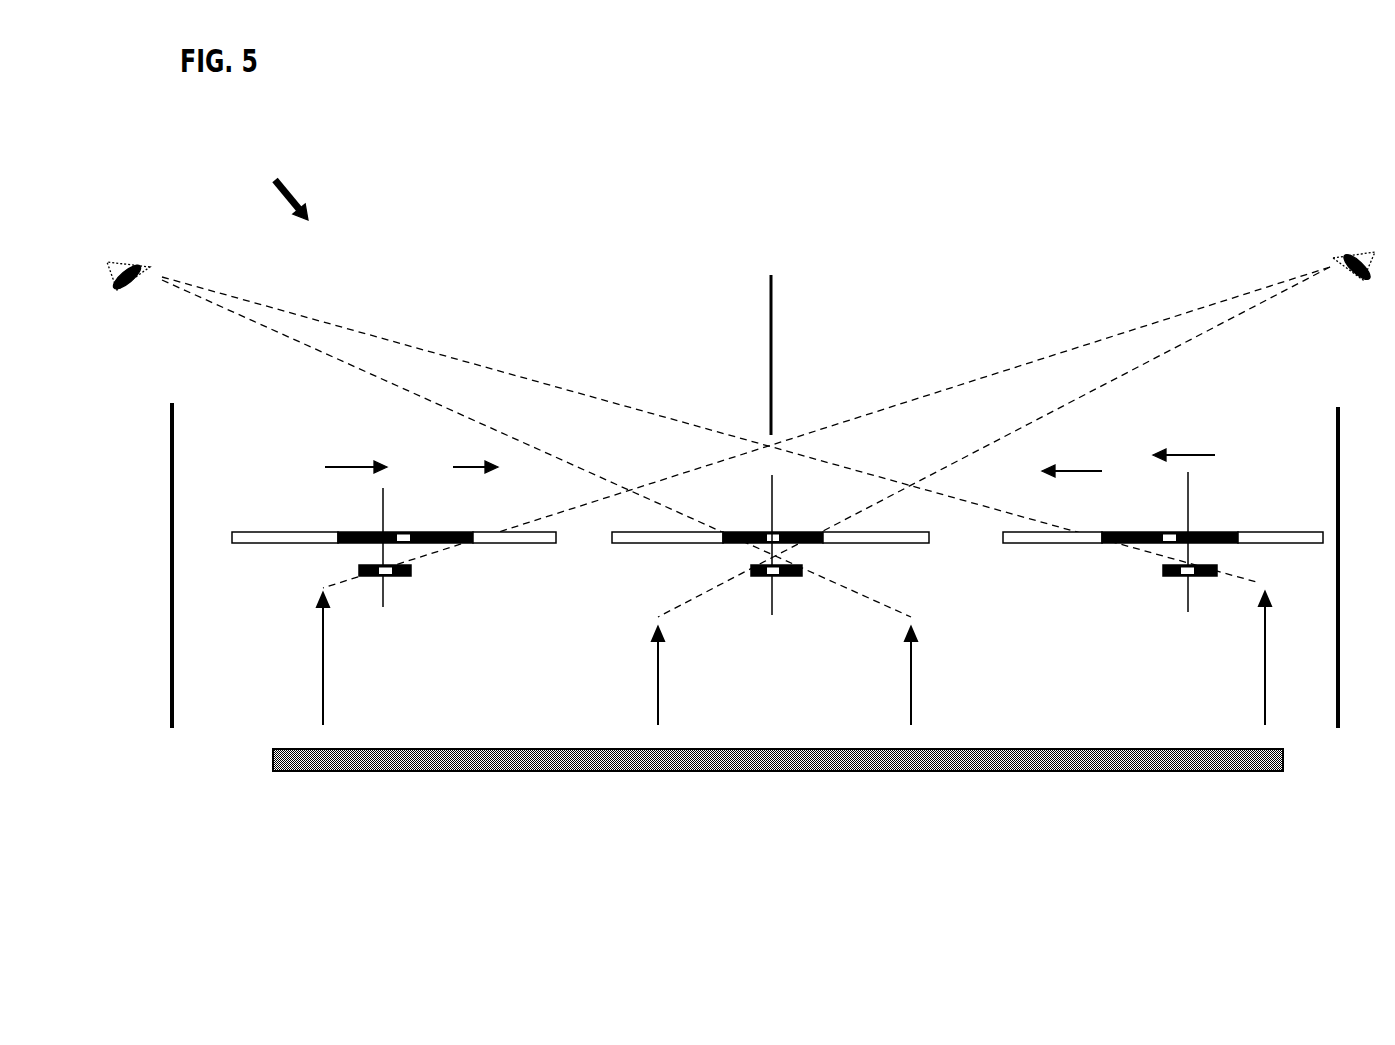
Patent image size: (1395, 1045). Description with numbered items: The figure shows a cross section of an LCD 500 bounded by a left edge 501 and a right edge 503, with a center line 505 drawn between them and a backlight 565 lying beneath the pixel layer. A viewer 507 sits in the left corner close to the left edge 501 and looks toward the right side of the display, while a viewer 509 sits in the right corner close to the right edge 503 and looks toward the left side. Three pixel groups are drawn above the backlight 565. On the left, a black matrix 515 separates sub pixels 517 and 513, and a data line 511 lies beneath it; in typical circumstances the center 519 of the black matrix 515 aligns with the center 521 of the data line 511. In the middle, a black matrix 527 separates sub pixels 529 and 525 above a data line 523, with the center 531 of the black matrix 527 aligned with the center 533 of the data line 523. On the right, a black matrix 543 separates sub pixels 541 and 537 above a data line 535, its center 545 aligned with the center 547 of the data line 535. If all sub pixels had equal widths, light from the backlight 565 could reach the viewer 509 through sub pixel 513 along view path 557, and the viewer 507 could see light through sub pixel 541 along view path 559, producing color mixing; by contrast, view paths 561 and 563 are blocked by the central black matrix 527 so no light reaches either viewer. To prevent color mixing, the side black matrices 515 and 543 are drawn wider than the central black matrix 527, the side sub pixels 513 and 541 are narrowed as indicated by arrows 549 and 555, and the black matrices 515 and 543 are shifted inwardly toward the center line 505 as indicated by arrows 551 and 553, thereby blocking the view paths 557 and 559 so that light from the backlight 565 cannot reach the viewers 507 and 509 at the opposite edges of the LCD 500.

The LCD 500 is at (273, 170).
The left edge 501 is at (172, 548).
The right edge 503 is at (1337, 440).
The center line 505 is at (771, 312).
The viewer 507 is at (140, 262).
The viewer 509 is at (1352, 252).
The data line 511 is at (360, 568).
The sub pixel 513 is at (510, 545).
The black matrix 515 is at (346, 530).
The sub pixel 517 is at (270, 530).
The center of black matrix 519 is at (405, 532).
The center of data line 521 is at (385, 578).
The data line 523 is at (750, 575).
The sub pixel 525 is at (900, 545).
The black matrix 527 is at (740, 530).
The sub pixel 529 is at (665, 545).
The center of black matrix 531 is at (785, 530).
The center of data line 533 is at (775, 582).
The data line 535 is at (1160, 575).
The sub pixel 537 is at (1262, 530).
The sub pixel 541 is at (1045, 545).
The black matrix 543 is at (1203, 530).
The center of black matrix 545 is at (1170, 530).
The center of data line 547 is at (1195, 578).
The arrow 549 is at (462, 465).
The arrow 551 is at (350, 465).
The arrow 553 is at (1190, 455).
The arrow 555 is at (1088, 470).
The view path 557 is at (1040, 358).
The view path 559 is at (475, 365).
The view path 561 is at (990, 443).
The view path 563 is at (550, 452).
The backlight 565 is at (277, 752).